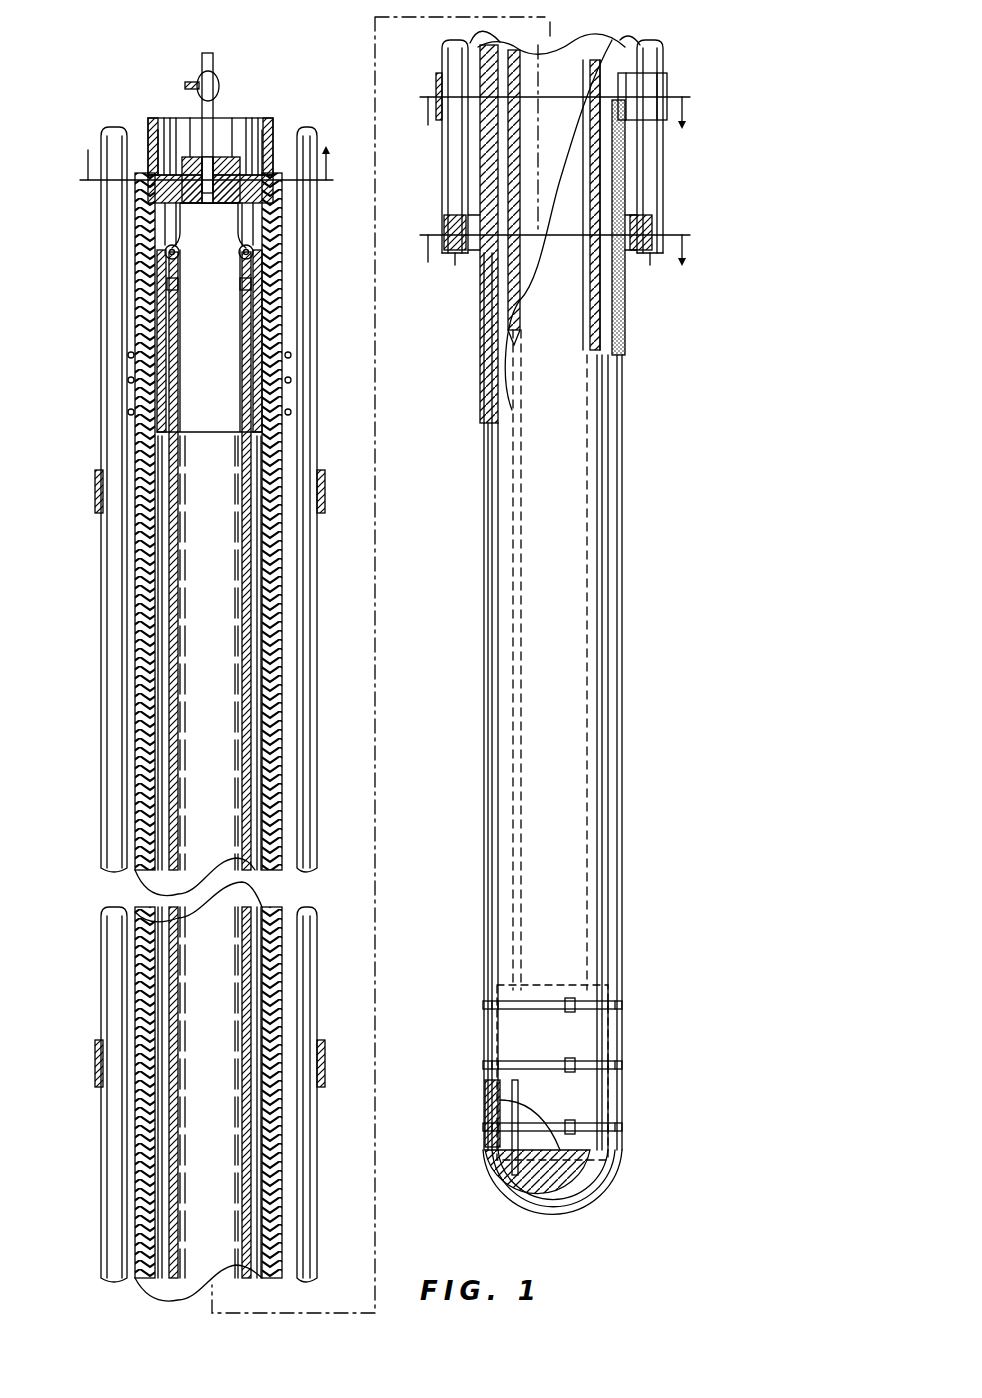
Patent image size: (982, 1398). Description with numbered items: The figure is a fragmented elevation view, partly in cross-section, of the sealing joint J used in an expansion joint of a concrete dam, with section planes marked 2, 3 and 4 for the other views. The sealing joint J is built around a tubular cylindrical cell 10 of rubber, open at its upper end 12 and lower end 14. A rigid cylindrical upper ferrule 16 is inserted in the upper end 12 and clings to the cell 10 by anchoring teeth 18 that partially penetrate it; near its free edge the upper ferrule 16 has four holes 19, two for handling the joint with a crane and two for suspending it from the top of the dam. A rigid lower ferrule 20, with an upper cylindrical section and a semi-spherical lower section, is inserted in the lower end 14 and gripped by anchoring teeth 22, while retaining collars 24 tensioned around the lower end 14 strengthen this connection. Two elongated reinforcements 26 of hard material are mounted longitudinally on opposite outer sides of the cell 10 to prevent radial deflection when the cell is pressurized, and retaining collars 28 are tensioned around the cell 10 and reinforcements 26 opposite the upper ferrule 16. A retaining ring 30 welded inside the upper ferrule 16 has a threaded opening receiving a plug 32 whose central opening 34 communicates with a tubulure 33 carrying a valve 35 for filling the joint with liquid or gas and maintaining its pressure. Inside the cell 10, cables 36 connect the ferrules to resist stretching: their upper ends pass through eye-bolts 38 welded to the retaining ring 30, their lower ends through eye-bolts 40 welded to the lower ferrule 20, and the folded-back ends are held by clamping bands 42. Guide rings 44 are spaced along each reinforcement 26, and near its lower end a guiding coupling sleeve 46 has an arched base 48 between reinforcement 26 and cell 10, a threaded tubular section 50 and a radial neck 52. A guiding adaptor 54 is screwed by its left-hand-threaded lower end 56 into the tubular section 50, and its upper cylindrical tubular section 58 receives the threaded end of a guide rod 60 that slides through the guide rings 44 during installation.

The tubular cylindrical cell 10 is at (145, 712).
The upper end 12 is at (283, 172).
The lower end 14 is at (485, 1115).
The upper ferrule 16 is at (132, 172).
The anchoring teeth 18 is at (272, 398).
The holes 19 is at (150, 150).
The lower ferrule 20 is at (560, 1205).
The anchoring teeth 22 is at (505, 1110).
The retaining collars 24 is at (650, 1060).
The reinforcements 26 is at (145, 798).
The retaining collars 28 is at (115, 298).
The retaining ring 30 is at (180, 175).
The plug 32 is at (222, 160).
The tubulure 33 is at (213, 70).
The central opening 34 is at (209, 205).
The valve 35 is at (198, 80).
The cables 36 is at (243, 588).
The eye-bolts 38 is at (172, 215).
The eye-bolts 40 is at (490, 1165).
The clamping bands 42 is at (246, 290).
The guide rings 44 is at (98, 472).
The guiding coupling sleeve 46 is at (442, 245).
The arched base 48 is at (482, 300).
The tubular section 50 is at (445, 222).
The neck 52 is at (468, 262).
The guiding adaptor 54 is at (445, 178).
The lower end 56 is at (455, 258).
The cylindrical tubular section 58 is at (455, 165).
The guide rod 60 is at (105, 842).
The section line 2- 2 is at (203, 178).
The section line 3- 3 is at (556, 94).
The section line 4- 4 is at (554, 234).
The sealing joint J is at (163, 72).